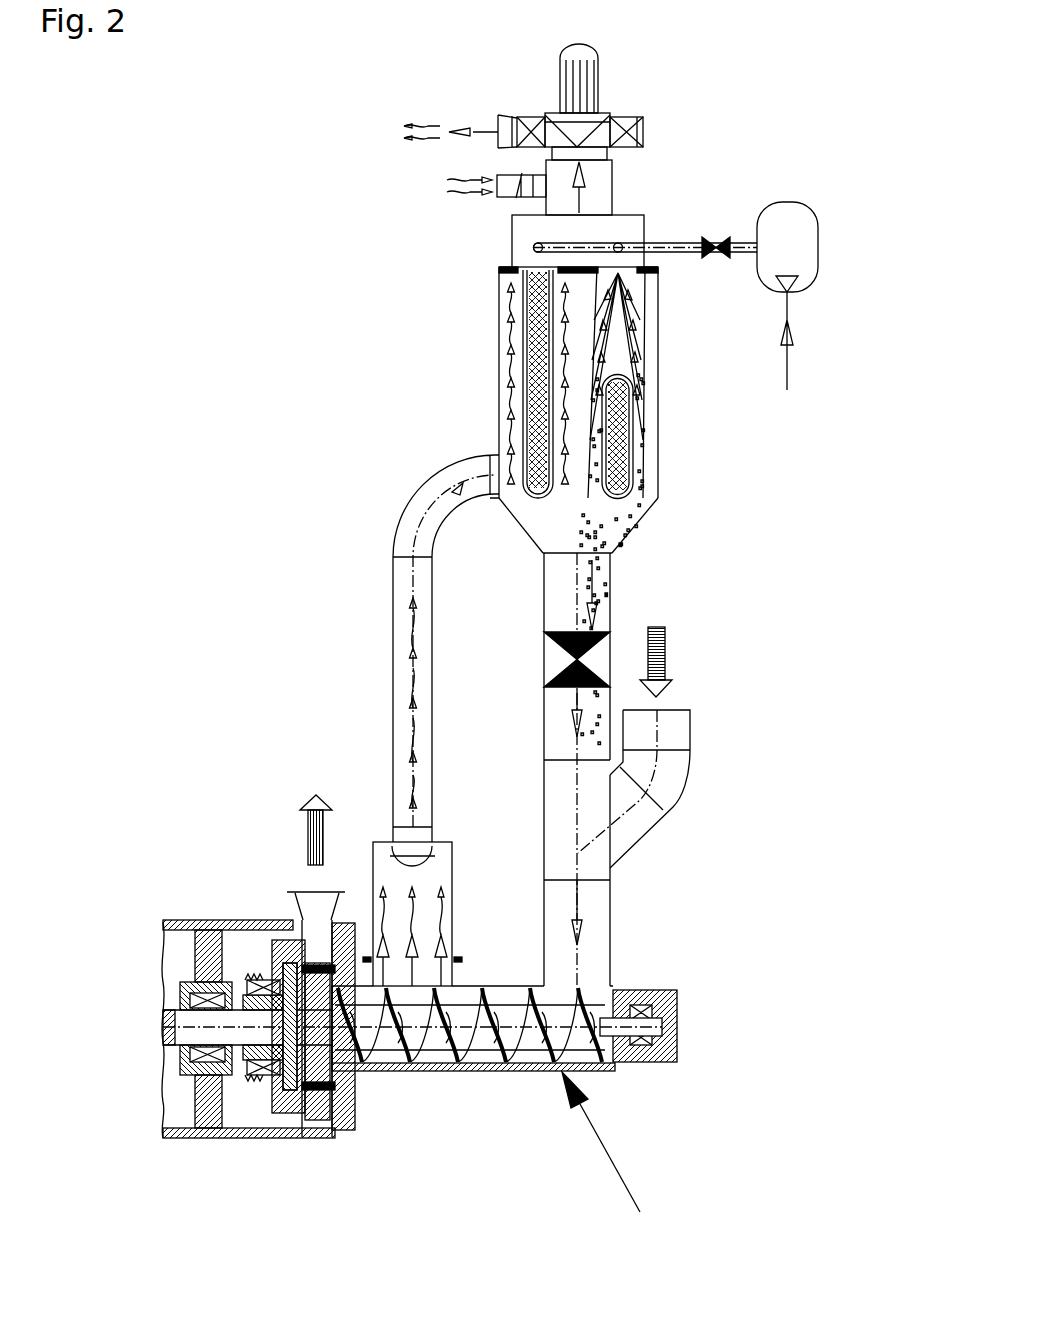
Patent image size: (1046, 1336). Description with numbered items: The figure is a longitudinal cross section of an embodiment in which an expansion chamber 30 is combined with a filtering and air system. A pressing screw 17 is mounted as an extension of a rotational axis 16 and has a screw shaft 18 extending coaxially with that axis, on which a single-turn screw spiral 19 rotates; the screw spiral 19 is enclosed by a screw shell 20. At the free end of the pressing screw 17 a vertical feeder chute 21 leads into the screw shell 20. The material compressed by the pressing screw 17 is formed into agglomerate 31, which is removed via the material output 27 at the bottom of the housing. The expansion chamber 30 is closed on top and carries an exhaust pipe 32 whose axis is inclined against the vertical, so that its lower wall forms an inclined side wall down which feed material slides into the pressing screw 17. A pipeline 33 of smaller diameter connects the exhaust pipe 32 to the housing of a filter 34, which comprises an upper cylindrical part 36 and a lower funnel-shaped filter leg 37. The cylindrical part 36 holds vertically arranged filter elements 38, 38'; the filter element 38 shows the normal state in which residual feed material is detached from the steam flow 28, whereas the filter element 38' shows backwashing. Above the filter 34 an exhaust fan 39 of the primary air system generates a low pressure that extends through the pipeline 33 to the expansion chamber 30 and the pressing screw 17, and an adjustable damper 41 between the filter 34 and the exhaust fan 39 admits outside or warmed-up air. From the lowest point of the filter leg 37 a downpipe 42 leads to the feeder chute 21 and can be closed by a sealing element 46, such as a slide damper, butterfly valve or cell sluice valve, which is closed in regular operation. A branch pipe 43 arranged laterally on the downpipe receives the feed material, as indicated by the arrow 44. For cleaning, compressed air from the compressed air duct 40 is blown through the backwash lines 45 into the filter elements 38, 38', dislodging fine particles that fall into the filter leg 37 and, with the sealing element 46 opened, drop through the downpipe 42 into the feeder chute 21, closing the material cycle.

The rotational axis 16 is at (620, 1072).
The pressing screw 17 is at (616, 1158).
The screw shaft 18 is at (536, 1074).
The screw spiral 19 is at (492, 1074).
The screw shell 20 is at (398, 1074).
The feeder chute 21 is at (636, 972).
The material output 27 is at (298, 912).
The steam flow 28 is at (468, 130).
The expansion chamber 30 is at (470, 960).
The agglomerate 31 is at (306, 826).
The exhaust pipe 32 is at (453, 866).
The pipeline 33 is at (385, 508).
The filter 34 is at (497, 354).
The upper cylindrical part 36 is at (658, 360).
The funnel-shaped filter leg 37 is at (652, 520).
The filter element 38 is at (498, 384).
The filter element 38' is at (669, 436).
The exhaust fan 39 is at (618, 118).
The compressed air duct 40 is at (812, 212).
The adjustable damper 41 is at (520, 178).
The downpipe 42 is at (544, 597).
The branch pipe 43 is at (690, 770).
The arrow 44 is at (668, 652).
The backwash lines 45 is at (655, 240).
The sealing element 46 is at (544, 680).